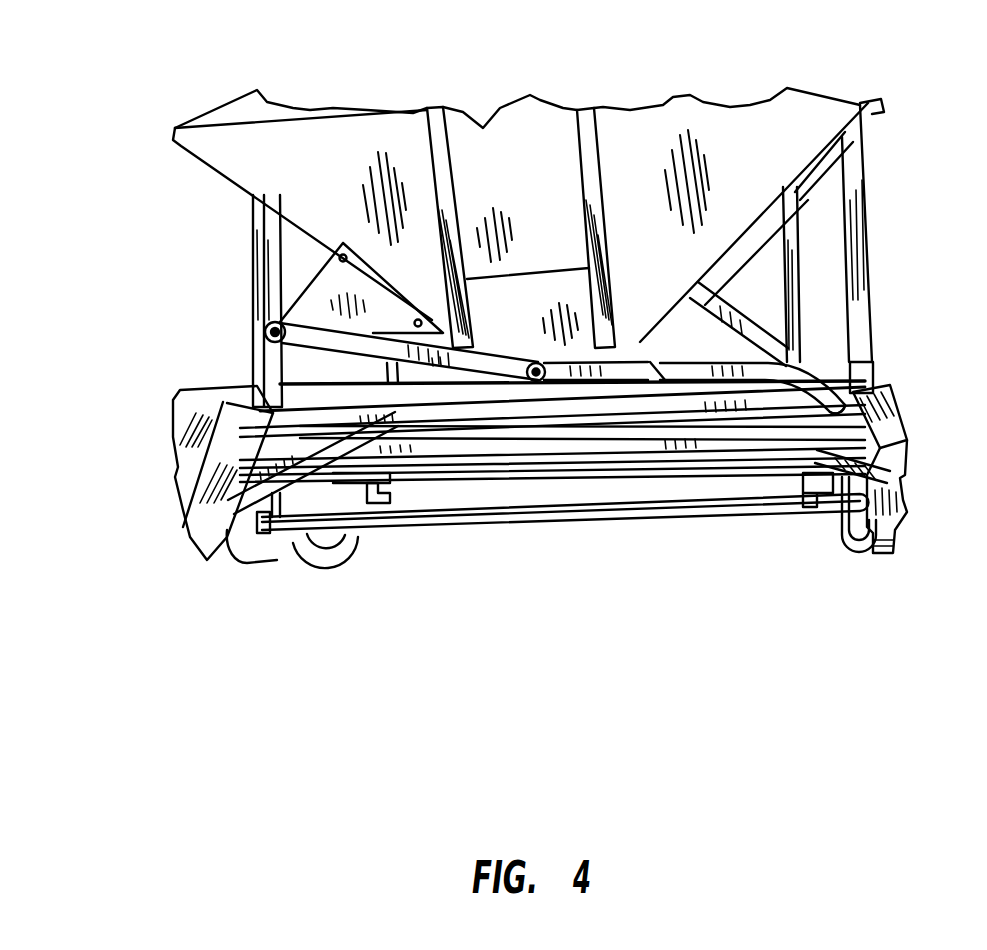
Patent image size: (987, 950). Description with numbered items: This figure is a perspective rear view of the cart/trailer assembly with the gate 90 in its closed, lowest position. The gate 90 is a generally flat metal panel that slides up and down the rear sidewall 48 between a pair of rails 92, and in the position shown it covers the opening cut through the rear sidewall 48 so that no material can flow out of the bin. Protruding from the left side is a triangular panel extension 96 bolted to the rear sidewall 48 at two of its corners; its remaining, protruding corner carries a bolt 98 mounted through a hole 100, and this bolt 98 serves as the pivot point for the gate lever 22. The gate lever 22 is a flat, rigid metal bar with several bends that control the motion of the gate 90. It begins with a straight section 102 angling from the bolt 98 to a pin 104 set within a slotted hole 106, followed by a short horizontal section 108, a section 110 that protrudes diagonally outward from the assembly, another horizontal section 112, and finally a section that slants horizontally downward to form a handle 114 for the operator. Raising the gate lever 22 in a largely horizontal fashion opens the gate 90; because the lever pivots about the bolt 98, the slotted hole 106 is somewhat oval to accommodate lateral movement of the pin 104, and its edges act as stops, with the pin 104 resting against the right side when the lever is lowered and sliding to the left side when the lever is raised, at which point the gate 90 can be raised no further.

The gate lever 22 is at (577, 381).
The rear sidewall 48 is at (368, 140).
The gate 90 is at (530, 290).
The rails 92 is at (435, 123).
The triangular panel extension 96 is at (318, 282).
The bolt 98 is at (262, 402).
The hole 100 is at (265, 329).
The straight section 102 is at (400, 347).
The pin 104 is at (535, 381).
The slotted hole 106 is at (490, 350).
The short horizontal section 108 is at (620, 381).
The section 110 is at (662, 337).
The horizontal section 112 is at (696, 381).
The handle 114 is at (822, 382).